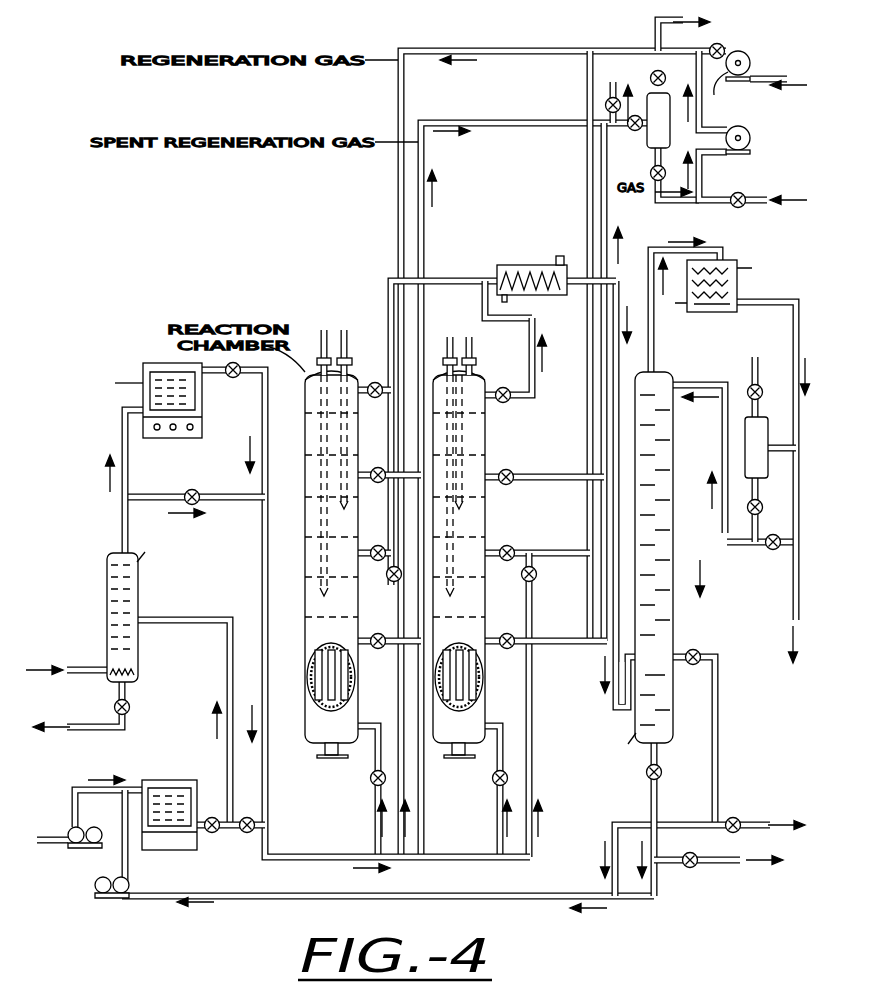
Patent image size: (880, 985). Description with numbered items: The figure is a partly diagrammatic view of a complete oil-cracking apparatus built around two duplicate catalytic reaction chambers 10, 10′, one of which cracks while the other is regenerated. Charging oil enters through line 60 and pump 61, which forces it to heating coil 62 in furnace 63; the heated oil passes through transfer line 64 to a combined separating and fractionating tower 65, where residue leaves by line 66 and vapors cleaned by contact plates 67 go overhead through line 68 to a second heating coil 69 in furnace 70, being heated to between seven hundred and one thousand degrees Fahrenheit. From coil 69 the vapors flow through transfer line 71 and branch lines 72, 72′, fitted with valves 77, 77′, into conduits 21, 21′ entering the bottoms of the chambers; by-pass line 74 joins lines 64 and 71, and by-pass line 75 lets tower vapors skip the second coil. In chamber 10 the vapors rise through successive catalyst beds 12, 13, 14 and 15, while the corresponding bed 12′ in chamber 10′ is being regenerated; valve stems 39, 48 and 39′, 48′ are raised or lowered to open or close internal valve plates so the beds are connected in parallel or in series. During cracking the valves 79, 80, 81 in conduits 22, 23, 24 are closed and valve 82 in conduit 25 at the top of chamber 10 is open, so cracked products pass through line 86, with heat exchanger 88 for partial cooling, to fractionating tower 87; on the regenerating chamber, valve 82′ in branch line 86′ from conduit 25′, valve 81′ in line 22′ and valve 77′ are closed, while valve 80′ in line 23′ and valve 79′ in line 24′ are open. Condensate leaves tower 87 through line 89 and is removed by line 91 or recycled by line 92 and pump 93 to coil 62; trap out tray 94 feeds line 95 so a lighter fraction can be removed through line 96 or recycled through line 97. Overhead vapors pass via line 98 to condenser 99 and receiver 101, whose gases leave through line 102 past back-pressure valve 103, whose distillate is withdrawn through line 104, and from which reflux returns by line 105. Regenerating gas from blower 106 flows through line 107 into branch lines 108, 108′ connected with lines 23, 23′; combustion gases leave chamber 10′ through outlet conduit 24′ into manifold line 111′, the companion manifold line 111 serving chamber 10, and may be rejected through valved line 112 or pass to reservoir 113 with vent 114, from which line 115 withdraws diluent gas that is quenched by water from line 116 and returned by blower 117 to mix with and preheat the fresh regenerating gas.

The reaction chamber 10 is at (307, 736).
The reaction chamber 10′ is at (434, 736).
The catalyst bed 12 is at (306, 680).
The catalyst bed 12′ is at (434, 685).
The catalyst bed 13 is at (304, 623).
The catalyst bed 14 is at (304, 541).
The catalyst bed 15 is at (304, 438).
The conduit 21 is at (372, 722).
The conduit 21′ is at (507, 741).
The conduit 22 is at (368, 654).
The line 22′ is at (511, 657).
The conduit 23 is at (382, 584).
The line 23′ is at (510, 705).
The conduit 24 is at (389, 496).
The outlet conduit 24′ is at (528, 478).
The conduit 25 is at (374, 409).
The conduit 25′ is at (534, 392).
The valve stem 39 is at (320, 328).
The valve stem 39′ is at (450, 339).
The valve stem 48 is at (346, 328).
The valve stem 48′ is at (482, 348).
The line 60 is at (52, 836).
The pump 61 is at (82, 833).
The heating coil 62 is at (212, 817).
The furnace 63 is at (156, 851).
The transfer line 64 is at (207, 834).
The combined separating and fractionating tower 65 is at (136, 600).
The line 66 is at (126, 698).
The contact plates 67 is at (108, 588).
The line 68 is at (122, 520).
The second heating coil 69 is at (148, 368).
The furnace 70 is at (152, 438).
The transfer line 71 is at (265, 861).
The branch line 72 is at (374, 826).
The branch line 72′ is at (496, 826).
The by-pass line 74 is at (246, 817).
The by-pass line 75 is at (227, 493).
The valve 77 is at (372, 784).
The valve 77′ is at (494, 784).
The valve 79 is at (377, 464).
The valve 79′ is at (508, 465).
The valve 80 is at (375, 538).
The valve 80′ is at (514, 553).
The valve 81 is at (370, 633).
The valve 81′ is at (546, 622).
The valve 82 is at (366, 384).
The valve 82′ is at (506, 383).
The line 86 is at (386, 292).
The branch line 86′ is at (525, 352).
The fractionating tower 87 is at (674, 602).
The heat exchanger 88 is at (545, 297).
The line 89 is at (674, 819).
The line 91 is at (682, 868).
The line 92 is at (546, 894).
The pump 93 is at (100, 897).
The trap out tray 94 is at (690, 650).
The line 95 is at (716, 724).
The line 96 is at (738, 820).
The line 97 is at (660, 824).
The line 98 is at (652, 322).
The condenser 99 is at (743, 291).
The receiver 101 is at (768, 468).
The line 102 is at (750, 357).
The valve 103 is at (748, 388).
The line 104 is at (770, 499).
The line 105 is at (722, 454).
The blower 106 is at (750, 63).
The line 107 is at (642, 48).
The branch line 108 is at (425, 52).
The branch line 108′ is at (588, 160).
The manifold line 111 is at (469, 124).
The manifold line 111′ is at (602, 200).
The valved line 112 is at (625, 75).
The reservoir 113 is at (655, 142).
The vent 114 is at (682, 51).
The line 115 is at (663, 188).
The line 116 is at (750, 206).
The blower 117 is at (750, 138).